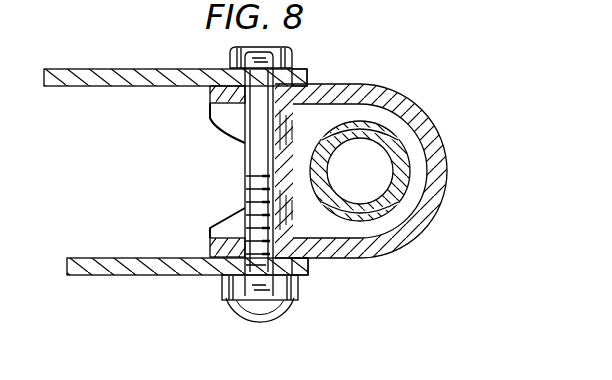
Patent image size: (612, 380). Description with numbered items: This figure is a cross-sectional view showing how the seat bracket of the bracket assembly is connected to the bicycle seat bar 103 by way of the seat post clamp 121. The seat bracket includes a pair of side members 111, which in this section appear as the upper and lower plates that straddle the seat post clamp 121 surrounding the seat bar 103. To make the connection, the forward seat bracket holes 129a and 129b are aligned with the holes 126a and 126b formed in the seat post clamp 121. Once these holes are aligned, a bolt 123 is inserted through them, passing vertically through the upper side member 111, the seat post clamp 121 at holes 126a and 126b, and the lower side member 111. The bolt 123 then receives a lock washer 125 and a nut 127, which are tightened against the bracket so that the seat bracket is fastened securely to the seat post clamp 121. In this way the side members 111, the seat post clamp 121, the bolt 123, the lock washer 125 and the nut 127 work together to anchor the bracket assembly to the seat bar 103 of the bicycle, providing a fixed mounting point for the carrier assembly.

The side members 111 is at (112, 68).
The seat post clamp 121 is at (408, 108).
The seat bar 103 is at (405, 165).
The bolt 123 is at (255, 160).
The lock washer 125 is at (228, 278).
The nut 127 is at (300, 292).
The forward seat bracket hole 129a is at (308, 268).
The forward seat bracket hole 129b is at (298, 70).
The seat post clamp hole 126a is at (243, 240).
The seat post clamp hole 126b is at (213, 120).